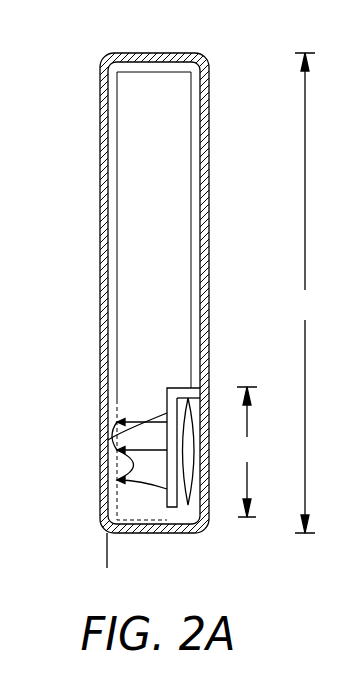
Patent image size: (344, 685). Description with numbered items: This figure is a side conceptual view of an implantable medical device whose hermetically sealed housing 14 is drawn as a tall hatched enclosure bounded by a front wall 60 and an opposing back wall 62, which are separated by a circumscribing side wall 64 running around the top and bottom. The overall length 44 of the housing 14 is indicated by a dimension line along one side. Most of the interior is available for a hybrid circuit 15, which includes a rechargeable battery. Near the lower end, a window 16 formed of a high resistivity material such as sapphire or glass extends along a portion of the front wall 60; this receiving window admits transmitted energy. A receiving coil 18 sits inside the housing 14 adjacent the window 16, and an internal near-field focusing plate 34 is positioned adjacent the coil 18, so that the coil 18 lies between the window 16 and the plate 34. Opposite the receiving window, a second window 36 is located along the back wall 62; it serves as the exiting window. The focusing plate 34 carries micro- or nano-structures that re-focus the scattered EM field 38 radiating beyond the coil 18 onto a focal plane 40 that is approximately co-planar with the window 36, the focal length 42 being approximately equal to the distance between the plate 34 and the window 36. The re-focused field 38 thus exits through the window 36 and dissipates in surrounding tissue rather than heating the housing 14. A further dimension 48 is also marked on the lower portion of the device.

The housing 14 is at (153, 269).
The hybrid circuit 15 is at (130, 138).
The window 16 is at (200, 441).
The receiving coil 18 is at (197, 402).
The internal near-field focusing plate 34 is at (173, 525).
The second window 36 is at (106, 393).
The EM field 38 is at (108, 428).
The focal plane 40 is at (107, 542).
The focal length 42 is at (117, 480).
The overall length 44 is at (304, 293).
The holder length 48 is at (247, 452).
The front wall 60 is at (208, 162).
The back wall 62 is at (100, 215).
The circumscribing side wall 64 is at (150, 53).